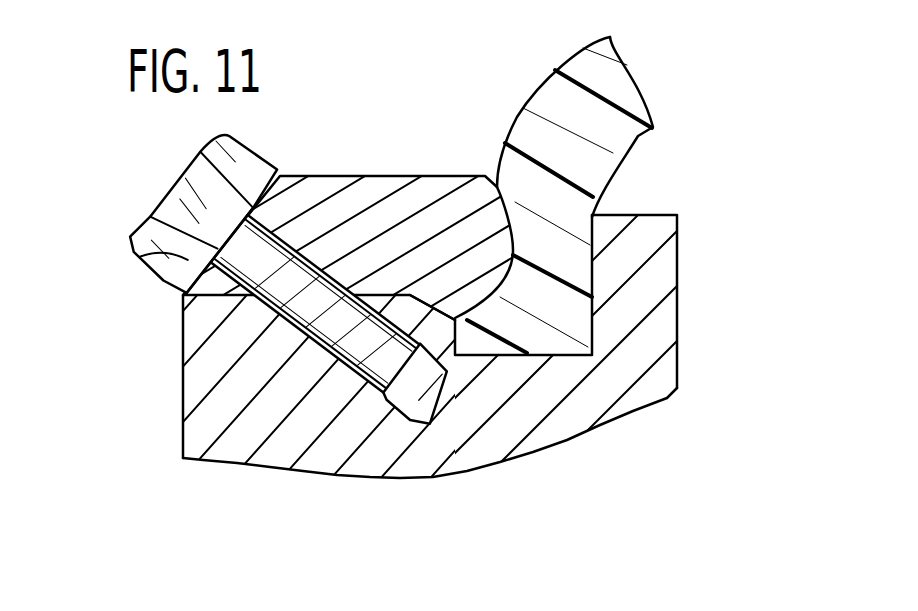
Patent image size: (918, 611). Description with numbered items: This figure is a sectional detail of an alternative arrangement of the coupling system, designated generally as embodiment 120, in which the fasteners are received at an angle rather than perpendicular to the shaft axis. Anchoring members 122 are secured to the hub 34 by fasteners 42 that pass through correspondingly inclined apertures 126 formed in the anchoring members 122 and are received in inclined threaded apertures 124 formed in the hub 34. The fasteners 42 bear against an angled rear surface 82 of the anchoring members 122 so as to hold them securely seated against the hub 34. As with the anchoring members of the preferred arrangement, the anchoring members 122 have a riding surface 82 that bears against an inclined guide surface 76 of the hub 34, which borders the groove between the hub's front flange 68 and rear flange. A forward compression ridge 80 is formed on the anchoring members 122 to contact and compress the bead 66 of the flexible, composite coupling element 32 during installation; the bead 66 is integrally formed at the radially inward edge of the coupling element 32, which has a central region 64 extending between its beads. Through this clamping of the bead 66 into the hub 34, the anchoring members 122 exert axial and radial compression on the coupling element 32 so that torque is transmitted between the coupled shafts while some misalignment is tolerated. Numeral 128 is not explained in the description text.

The coupling element 32 is at (630, 147).
The hub 34 is at (665, 378).
The fasteners 42 is at (172, 207).
The central region 64 is at (622, 86).
The bead 66 is at (563, 343).
The front flange 68 is at (650, 240).
The inclined guide surface 76 is at (437, 330).
The compression ridge 80 is at (500, 222).
The riding surface 82 is at (452, 300).
The alternative embodiment 120 is at (140, 419).
The anchoring members 122 is at (366, 192).
The inclined threaded apertures 124 is at (390, 397).
The inclined apertures 126 is at (200, 320).
The bolt flange 128 is at (150, 260).